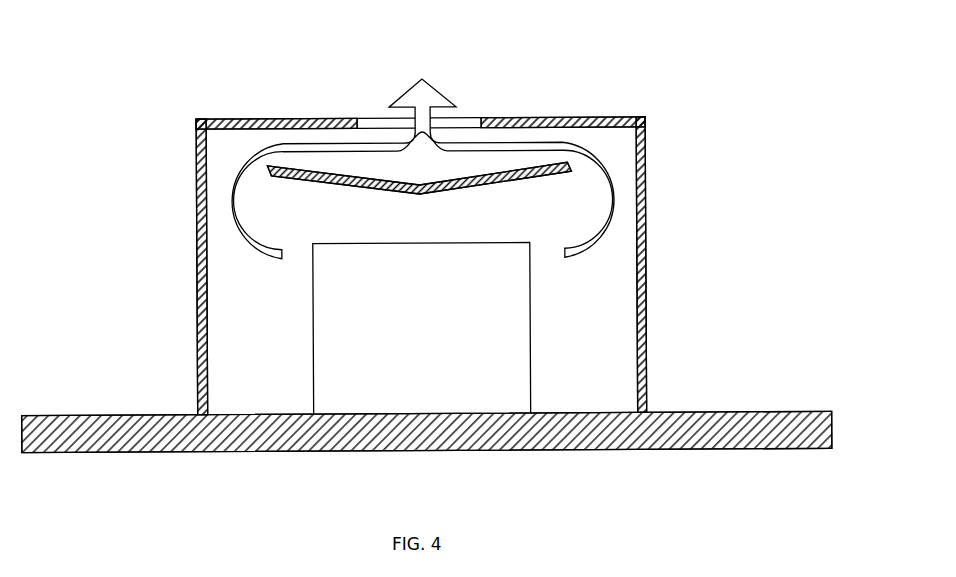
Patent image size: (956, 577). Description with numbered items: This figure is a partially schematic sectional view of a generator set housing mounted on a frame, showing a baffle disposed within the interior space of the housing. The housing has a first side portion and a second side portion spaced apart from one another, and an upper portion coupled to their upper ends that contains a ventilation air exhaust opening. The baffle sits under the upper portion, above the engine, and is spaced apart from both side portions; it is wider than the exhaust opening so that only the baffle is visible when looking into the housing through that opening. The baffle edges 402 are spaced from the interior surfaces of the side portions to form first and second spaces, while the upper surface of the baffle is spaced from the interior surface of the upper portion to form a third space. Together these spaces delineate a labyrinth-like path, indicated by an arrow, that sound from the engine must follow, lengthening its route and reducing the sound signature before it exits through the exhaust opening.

The deflector plate 402 is at (419, 178).